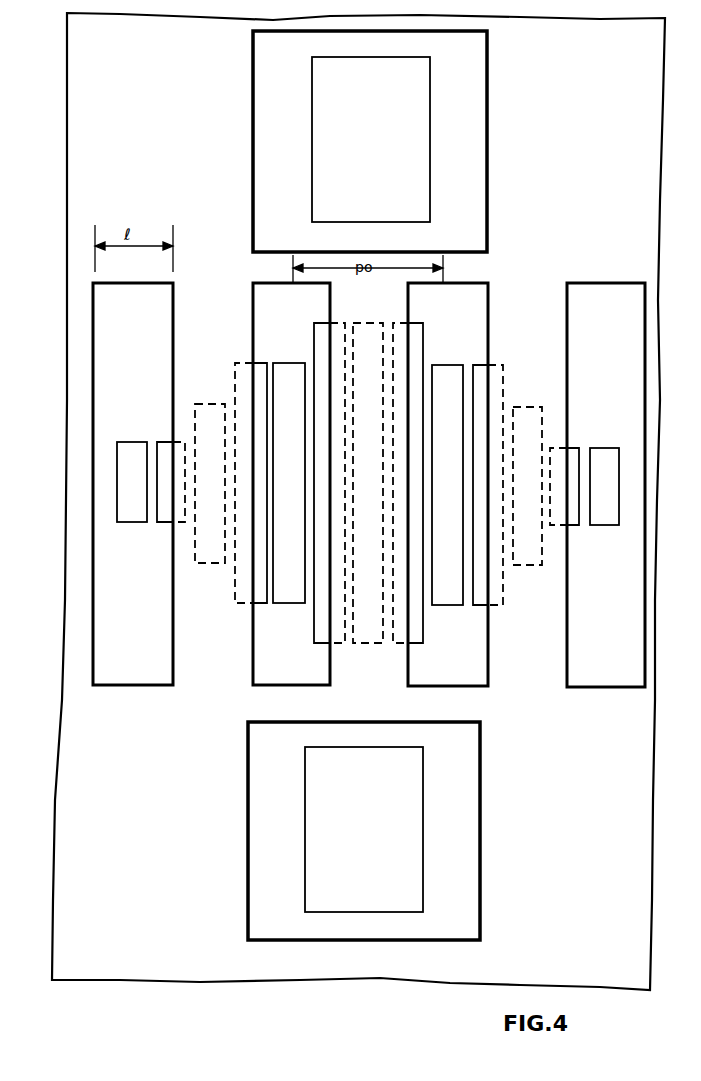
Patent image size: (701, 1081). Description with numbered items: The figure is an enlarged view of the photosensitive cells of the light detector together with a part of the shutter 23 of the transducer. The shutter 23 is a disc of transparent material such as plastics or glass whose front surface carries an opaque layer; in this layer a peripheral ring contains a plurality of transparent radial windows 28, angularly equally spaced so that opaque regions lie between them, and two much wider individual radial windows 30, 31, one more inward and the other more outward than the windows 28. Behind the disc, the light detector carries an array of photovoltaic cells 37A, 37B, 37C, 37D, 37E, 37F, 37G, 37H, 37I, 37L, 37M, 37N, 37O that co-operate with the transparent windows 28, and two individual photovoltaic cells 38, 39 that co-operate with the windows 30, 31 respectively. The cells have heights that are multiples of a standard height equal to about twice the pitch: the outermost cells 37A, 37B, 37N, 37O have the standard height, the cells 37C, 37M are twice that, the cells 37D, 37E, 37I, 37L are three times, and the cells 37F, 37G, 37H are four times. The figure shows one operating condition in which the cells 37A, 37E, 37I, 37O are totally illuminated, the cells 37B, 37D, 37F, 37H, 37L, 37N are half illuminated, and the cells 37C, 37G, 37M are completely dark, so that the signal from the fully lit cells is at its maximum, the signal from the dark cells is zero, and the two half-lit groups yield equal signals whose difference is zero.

The shutter 23 is at (67, 795).
The transparent radial windows 28 is at (133, 688).
The individual radial window 30 is at (482, 190).
The individual radial window 31 is at (472, 825).
The individual photovoltaic cell 38 is at (418, 165).
The individual photovoltaic cell 39 is at (318, 803).
The photovoltaic cell 37A is at (133, 442).
The photovoltaic cell 37B is at (161, 522).
The photovoltaic cell 37C is at (205, 412).
The photovoltaic cell 37D is at (258, 365).
The photovoltaic cell 37E is at (287, 603).
The photovoltaic cell 37F is at (323, 328).
The photovoltaic cell 37G is at (367, 647).
The photovoltaic cell 37H is at (417, 333).
The photovoltaic cell 37I is at (443, 380).
The photovoltaic cell 37L is at (477, 607).
The photovoltaic cell 37M is at (533, 567).
The photovoltaic cell 37N is at (573, 455).
The photovoltaic cell 37O is at (602, 527).